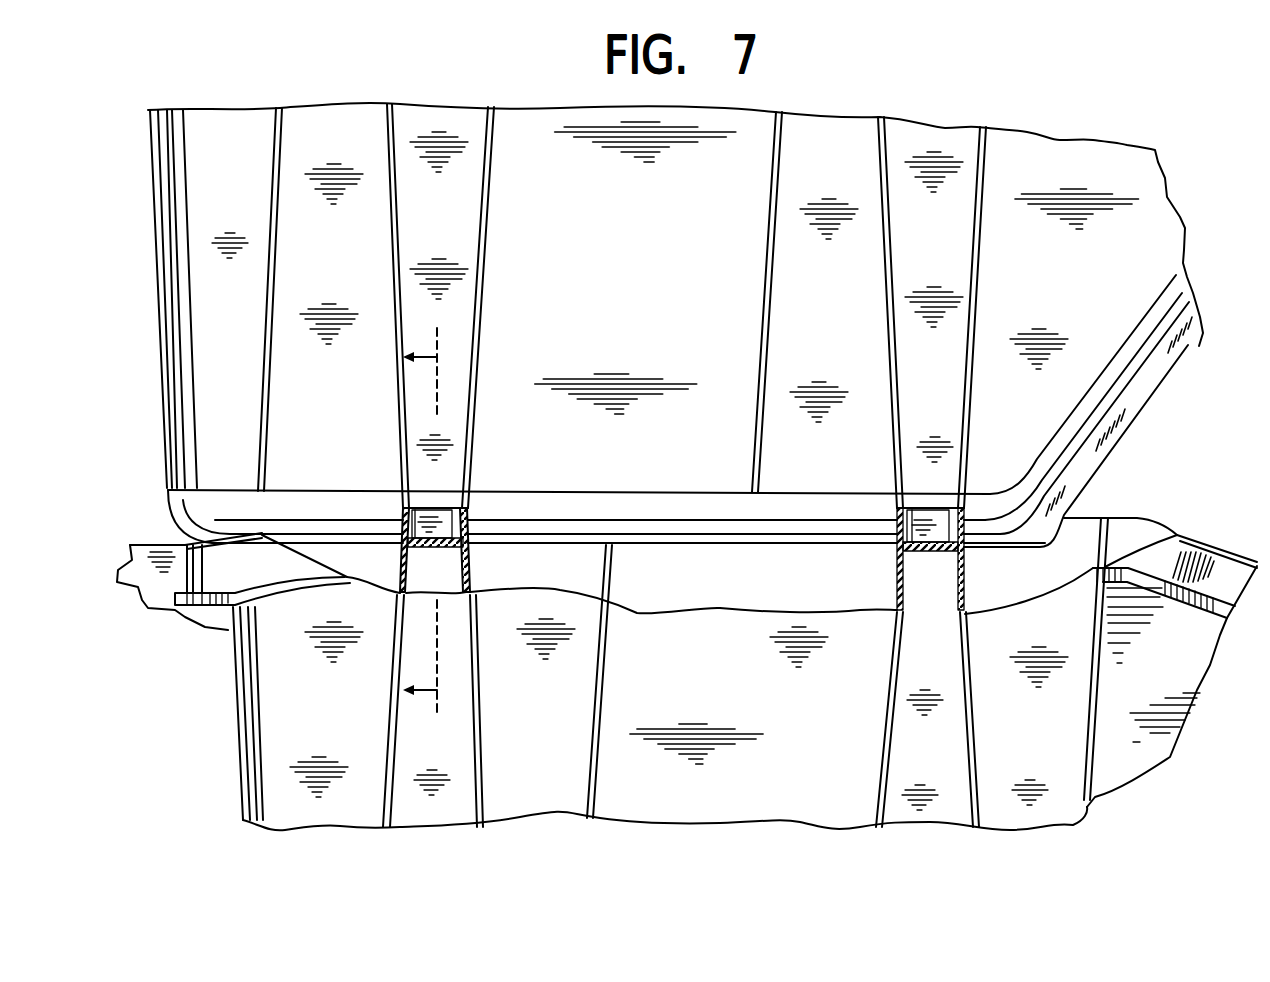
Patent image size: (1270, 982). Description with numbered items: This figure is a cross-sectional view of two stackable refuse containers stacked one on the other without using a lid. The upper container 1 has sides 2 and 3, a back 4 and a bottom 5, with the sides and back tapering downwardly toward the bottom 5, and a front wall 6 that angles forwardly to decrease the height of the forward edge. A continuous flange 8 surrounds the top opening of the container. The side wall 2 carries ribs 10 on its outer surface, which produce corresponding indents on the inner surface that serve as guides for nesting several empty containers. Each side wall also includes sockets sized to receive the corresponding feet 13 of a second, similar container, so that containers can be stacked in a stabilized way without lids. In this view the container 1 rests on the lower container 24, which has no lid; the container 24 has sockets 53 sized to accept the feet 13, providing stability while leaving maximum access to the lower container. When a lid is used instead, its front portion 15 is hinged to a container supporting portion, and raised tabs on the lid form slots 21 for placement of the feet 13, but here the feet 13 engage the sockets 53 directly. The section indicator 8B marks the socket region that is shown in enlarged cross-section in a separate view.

The stackable refuse container 1 is at (1192, 222).
The side 2 is at (682, 600).
The side 3 is at (656, 267).
The back 4 is at (190, 252).
The bottom 5 is at (728, 543).
The front wall 6 is at (1150, 382).
The continuous flange 8 is at (1208, 563).
The ribs 10 is at (463, 247).
The feet 13 is at (445, 510).
The front portion 15 is at (1143, 530).
The slots 21 is at (900, 540).
The container 24 is at (1172, 762).
The sockets 53 is at (947, 558).
The section line 8B is at (449, 521).